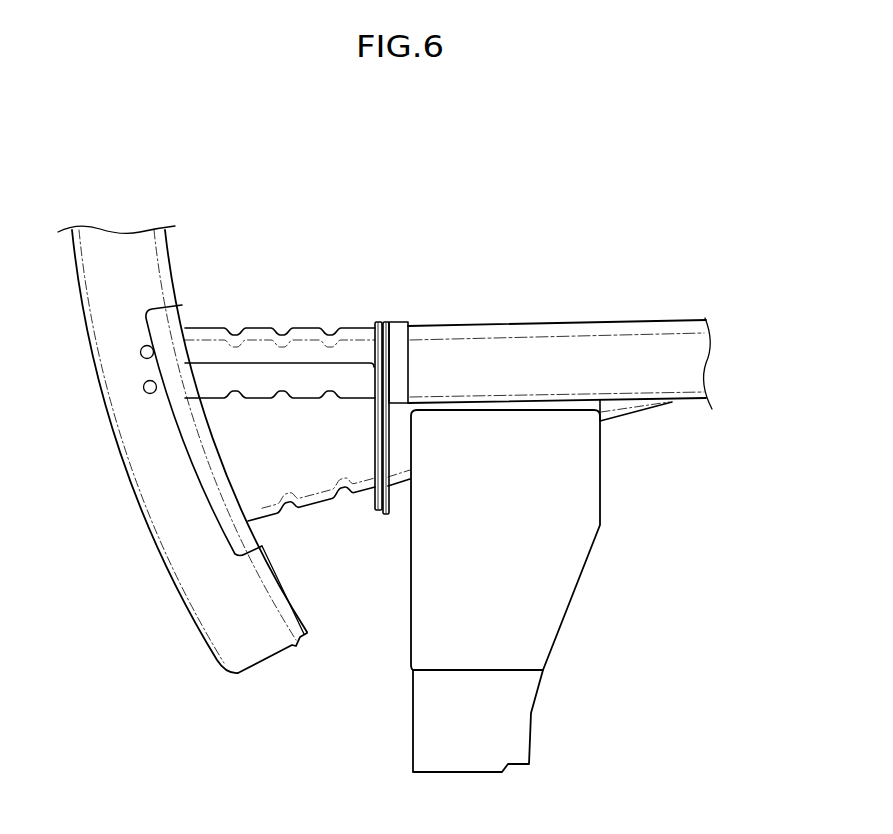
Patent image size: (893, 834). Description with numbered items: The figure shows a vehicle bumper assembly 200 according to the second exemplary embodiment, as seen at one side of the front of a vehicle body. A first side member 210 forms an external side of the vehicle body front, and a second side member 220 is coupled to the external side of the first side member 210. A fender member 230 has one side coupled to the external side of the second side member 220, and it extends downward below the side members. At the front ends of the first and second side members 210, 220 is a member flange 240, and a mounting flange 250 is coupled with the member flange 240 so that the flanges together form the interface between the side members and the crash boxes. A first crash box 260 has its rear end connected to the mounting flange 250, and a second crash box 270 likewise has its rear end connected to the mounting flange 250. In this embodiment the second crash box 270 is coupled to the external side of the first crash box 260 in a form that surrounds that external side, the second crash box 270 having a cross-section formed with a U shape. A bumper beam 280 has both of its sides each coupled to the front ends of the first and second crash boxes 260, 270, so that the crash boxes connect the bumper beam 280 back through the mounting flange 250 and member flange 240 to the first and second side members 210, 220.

The vehicle bumper assembly 200 is at (383, 167).
The first side member 210 is at (522, 354).
The second side member 220 is at (608, 406).
The fender member 230 is at (553, 542).
The member flange 240 is at (389, 345).
The mounting flange 250 is at (370, 347).
The first crash box 260 is at (251, 356).
The second crash box 270 is at (305, 467).
The bumper beam 280 is at (148, 443).